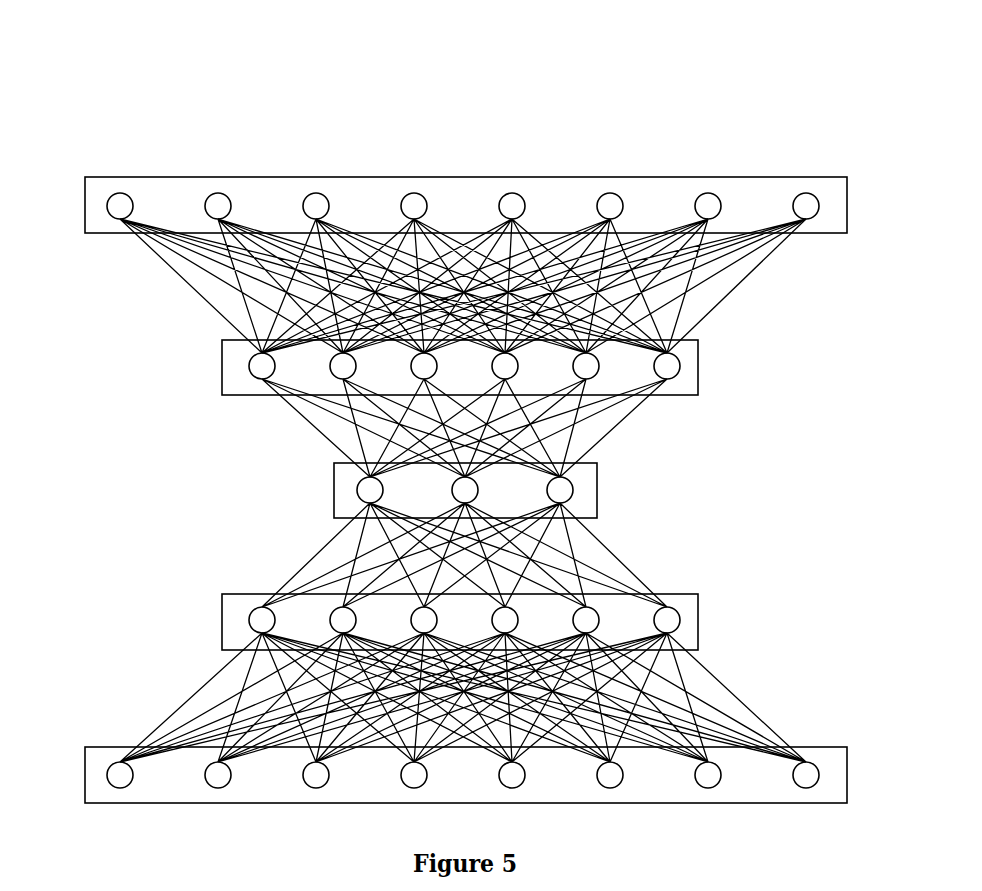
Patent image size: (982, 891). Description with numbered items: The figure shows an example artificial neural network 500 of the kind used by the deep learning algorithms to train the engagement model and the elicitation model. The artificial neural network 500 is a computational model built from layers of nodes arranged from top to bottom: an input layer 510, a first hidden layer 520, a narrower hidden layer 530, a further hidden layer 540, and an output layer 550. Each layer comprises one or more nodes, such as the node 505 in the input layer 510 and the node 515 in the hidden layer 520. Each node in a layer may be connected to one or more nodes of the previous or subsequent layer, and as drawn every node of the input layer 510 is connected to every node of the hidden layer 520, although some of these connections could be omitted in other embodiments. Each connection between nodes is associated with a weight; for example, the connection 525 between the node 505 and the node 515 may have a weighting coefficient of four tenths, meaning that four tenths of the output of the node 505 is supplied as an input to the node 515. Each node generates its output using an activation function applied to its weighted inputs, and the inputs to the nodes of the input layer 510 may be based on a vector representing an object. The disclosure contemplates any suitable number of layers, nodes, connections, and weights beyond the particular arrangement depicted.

The artificial neural network 500 is at (186, 114).
The node 505 is at (820, 206).
The input layer 510 is at (84, 208).
The node 515 is at (681, 366).
The hidden layer 520 is at (221, 370).
The connection 525 is at (736, 287).
The hidden layer 530 is at (334, 490).
The second hidden layer (decoder) 540 is at (221, 622).
The output layer 550 is at (84, 776).